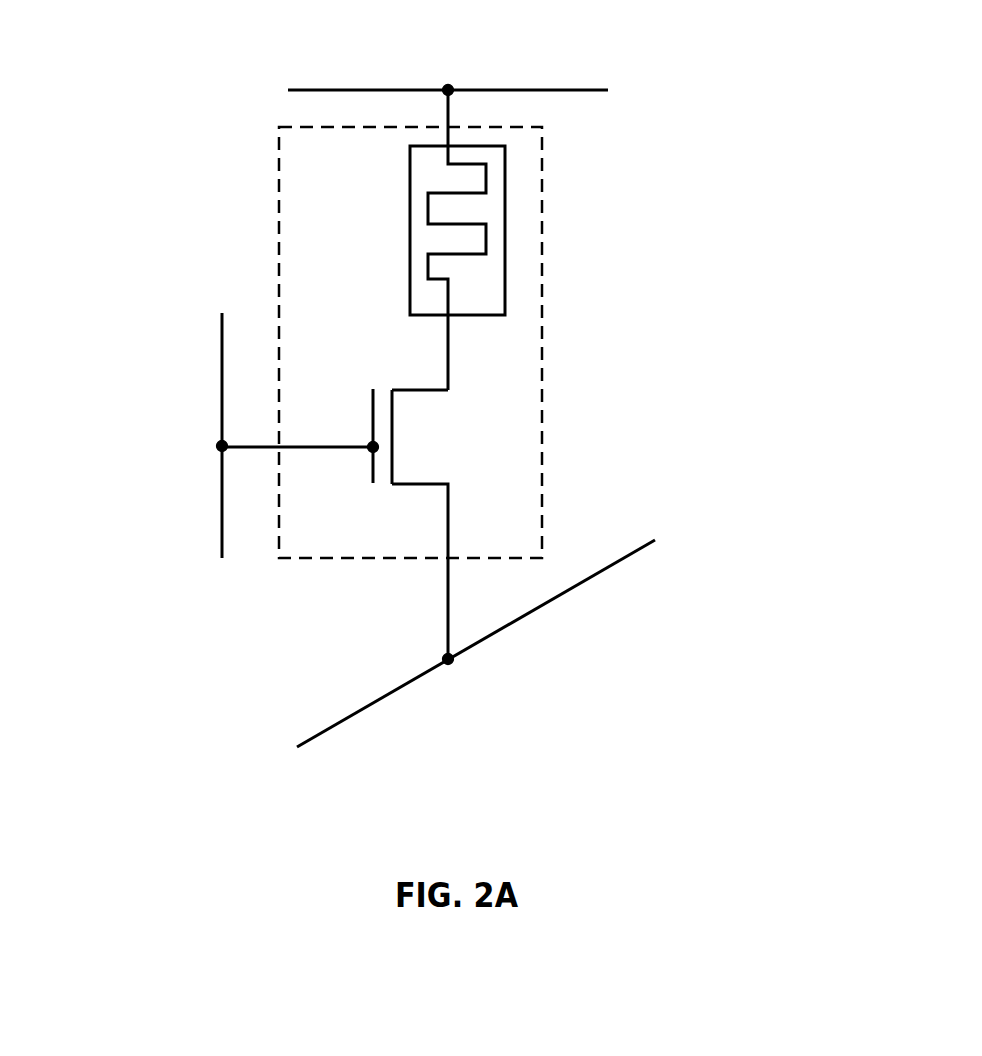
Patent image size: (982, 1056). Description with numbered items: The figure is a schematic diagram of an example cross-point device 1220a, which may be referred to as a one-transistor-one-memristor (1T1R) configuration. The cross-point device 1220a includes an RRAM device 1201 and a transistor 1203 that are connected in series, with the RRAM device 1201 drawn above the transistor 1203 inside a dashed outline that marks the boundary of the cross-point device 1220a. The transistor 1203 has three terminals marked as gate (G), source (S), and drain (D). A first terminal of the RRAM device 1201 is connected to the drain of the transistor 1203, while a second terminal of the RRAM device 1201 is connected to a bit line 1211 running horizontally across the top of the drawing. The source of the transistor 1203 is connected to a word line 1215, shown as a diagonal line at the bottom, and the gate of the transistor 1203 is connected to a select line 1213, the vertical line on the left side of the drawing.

The bit line 1211 is at (552, 88).
The select line 1213 is at (222, 390).
The word line 1215 is at (527, 615).
The cross-point device 1220a is at (280, 181).
The RRAM device 1201 is at (410, 233).
The transistor 1203 is at (392, 445).